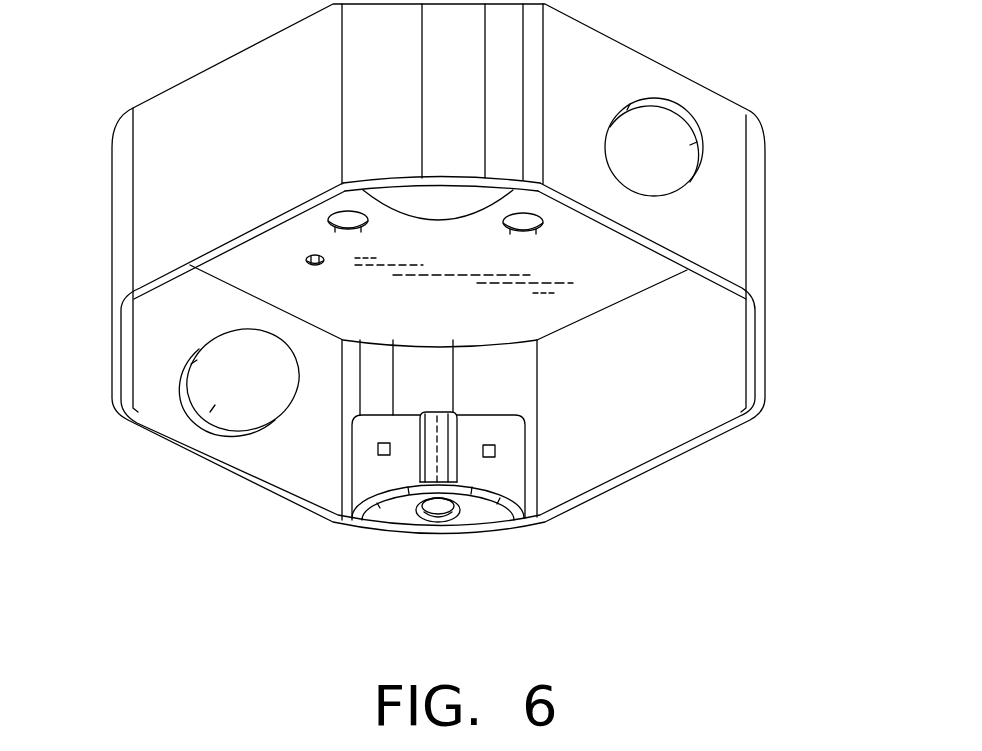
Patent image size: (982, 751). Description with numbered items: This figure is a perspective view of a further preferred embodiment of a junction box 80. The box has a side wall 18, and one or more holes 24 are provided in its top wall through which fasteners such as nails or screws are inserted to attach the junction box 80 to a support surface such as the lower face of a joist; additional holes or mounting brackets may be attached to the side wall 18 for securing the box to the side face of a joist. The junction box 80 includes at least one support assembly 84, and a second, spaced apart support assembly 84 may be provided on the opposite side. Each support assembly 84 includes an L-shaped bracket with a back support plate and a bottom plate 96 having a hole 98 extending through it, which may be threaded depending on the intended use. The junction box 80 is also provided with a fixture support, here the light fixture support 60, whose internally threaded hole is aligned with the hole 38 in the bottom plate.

The side wall 18 is at (262, 172).
The hole 24 is at (330, 230).
The junction box 80 is at (775, 302).
The light fixture support 60 is at (467, 435).
The support assembly 84 is at (367, 468).
The bottom plate 96 is at (393, 510).
The hole 38 is at (422, 517).
The hole 98 is at (488, 537).